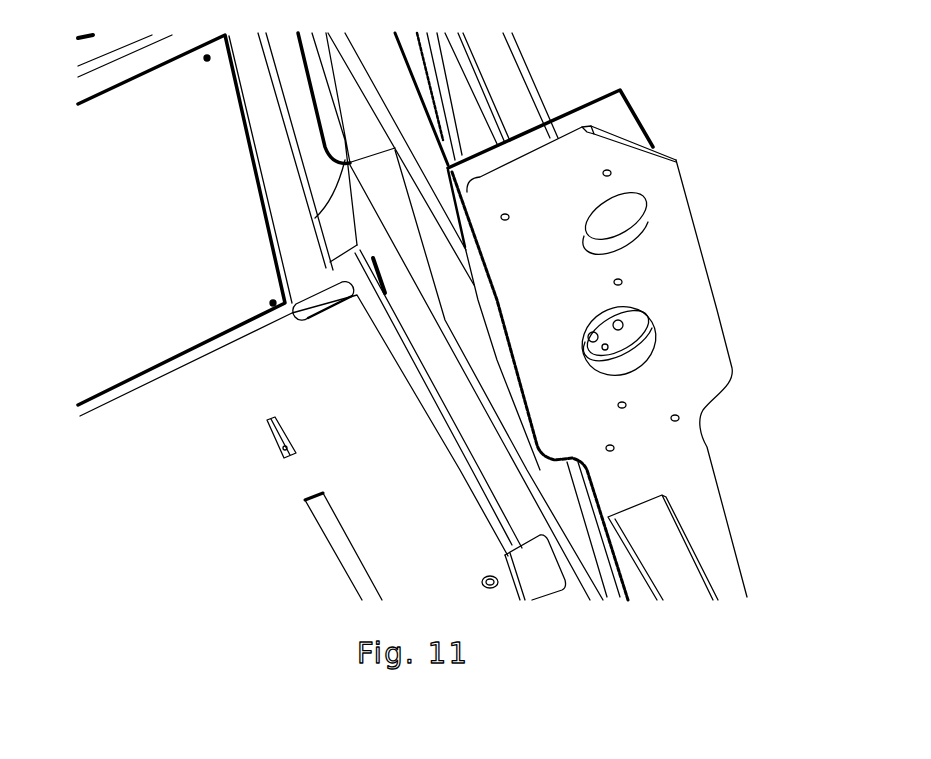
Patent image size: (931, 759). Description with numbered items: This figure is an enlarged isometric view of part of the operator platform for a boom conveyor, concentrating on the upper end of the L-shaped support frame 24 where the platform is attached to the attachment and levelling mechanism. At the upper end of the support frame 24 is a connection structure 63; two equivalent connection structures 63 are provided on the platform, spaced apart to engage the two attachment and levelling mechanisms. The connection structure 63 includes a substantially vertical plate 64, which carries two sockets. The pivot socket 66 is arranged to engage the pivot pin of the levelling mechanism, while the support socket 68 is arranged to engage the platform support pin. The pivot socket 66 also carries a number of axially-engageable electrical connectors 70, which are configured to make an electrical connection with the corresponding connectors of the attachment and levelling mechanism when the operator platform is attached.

The support frame 24 is at (710, 532).
The connection structure 63 is at (657, 147).
The vertical plate 64 is at (683, 270).
The pivot socket 66 is at (653, 333).
The support socket 68 is at (650, 213).
The electrical connectors 70 is at (620, 327).